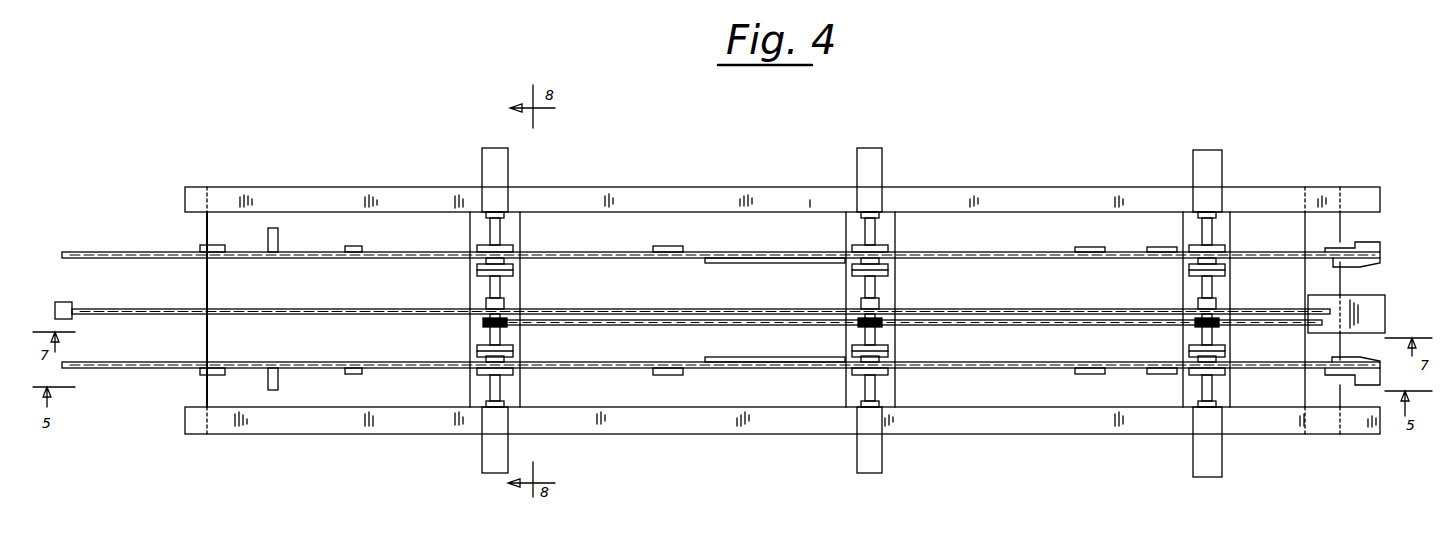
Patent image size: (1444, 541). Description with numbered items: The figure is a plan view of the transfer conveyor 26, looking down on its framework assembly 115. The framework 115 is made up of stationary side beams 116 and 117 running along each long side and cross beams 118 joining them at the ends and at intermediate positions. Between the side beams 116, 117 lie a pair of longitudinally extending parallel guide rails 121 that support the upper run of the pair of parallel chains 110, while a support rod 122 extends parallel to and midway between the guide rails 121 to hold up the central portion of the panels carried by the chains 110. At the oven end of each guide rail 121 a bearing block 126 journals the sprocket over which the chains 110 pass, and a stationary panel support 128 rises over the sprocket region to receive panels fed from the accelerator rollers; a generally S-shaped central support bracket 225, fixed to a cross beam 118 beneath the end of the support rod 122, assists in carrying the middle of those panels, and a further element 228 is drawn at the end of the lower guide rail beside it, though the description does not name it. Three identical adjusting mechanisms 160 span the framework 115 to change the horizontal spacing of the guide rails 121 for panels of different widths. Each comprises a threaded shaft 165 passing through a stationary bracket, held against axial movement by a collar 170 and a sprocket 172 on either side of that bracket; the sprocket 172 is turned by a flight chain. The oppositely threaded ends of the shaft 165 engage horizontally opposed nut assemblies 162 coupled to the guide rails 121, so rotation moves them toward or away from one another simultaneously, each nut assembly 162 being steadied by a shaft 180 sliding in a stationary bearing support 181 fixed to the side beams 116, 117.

The transfer conveyor 26 is at (720, 440).
The chains 110 is at (88, 250).
The framework assembly 115 is at (600, 425).
The side beam 116 is at (345, 423).
The side beam 117 is at (315, 190).
The cross beams 118 is at (190, 238).
The guide rails 121 is at (300, 250).
The support rod 122 is at (236, 309).
The bearing block 126 is at (1376, 243).
The panel support 128 is at (1385, 263).
The adjusting mechanism 160 is at (538, 236).
The nut assemblies 162 is at (510, 276).
The threaded shaft 165 is at (492, 285).
The collar 170 is at (488, 303).
The sprocket 172 is at (485, 322).
The shaft 180 is at (492, 232).
The bearing support 181 is at (485, 160).
The central support bracket 225 is at (1370, 305).
The actuator rod end 228 is at (1382, 350).